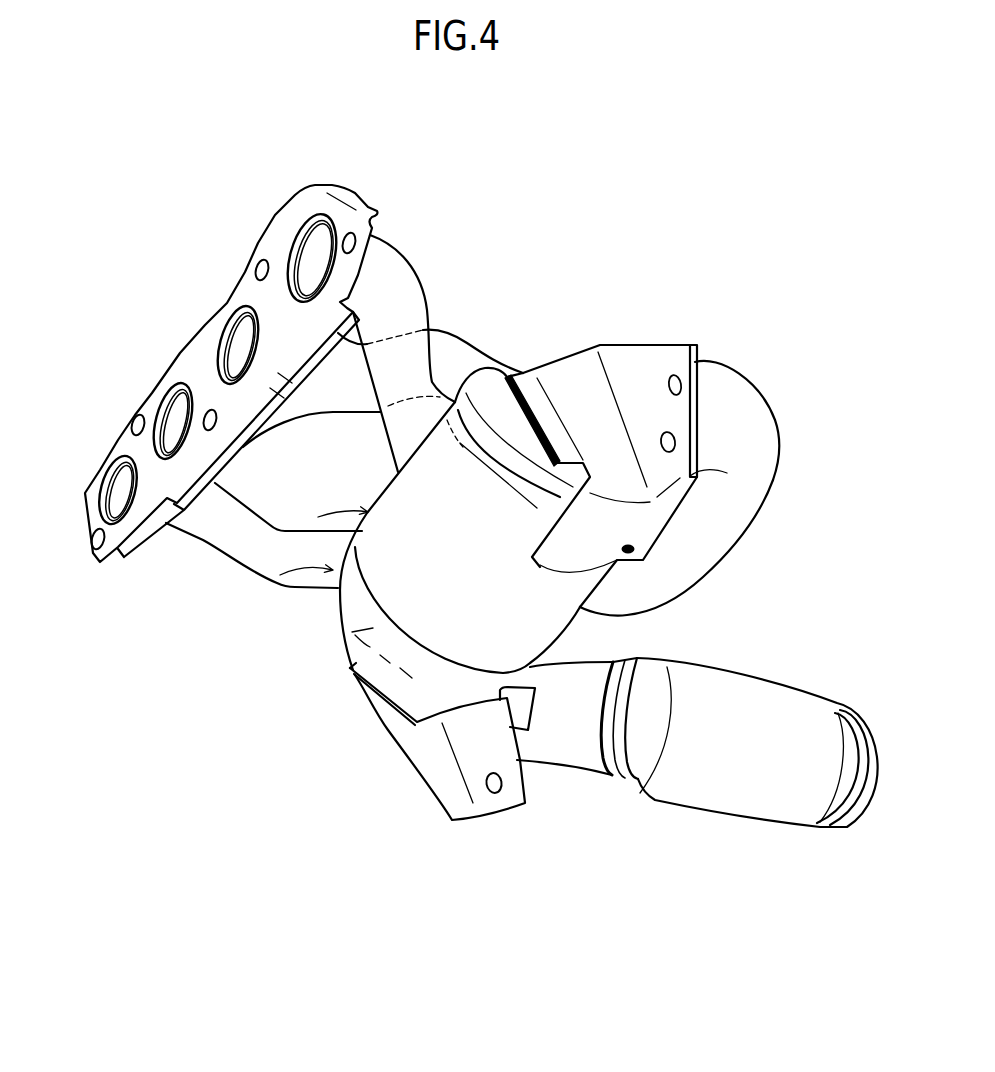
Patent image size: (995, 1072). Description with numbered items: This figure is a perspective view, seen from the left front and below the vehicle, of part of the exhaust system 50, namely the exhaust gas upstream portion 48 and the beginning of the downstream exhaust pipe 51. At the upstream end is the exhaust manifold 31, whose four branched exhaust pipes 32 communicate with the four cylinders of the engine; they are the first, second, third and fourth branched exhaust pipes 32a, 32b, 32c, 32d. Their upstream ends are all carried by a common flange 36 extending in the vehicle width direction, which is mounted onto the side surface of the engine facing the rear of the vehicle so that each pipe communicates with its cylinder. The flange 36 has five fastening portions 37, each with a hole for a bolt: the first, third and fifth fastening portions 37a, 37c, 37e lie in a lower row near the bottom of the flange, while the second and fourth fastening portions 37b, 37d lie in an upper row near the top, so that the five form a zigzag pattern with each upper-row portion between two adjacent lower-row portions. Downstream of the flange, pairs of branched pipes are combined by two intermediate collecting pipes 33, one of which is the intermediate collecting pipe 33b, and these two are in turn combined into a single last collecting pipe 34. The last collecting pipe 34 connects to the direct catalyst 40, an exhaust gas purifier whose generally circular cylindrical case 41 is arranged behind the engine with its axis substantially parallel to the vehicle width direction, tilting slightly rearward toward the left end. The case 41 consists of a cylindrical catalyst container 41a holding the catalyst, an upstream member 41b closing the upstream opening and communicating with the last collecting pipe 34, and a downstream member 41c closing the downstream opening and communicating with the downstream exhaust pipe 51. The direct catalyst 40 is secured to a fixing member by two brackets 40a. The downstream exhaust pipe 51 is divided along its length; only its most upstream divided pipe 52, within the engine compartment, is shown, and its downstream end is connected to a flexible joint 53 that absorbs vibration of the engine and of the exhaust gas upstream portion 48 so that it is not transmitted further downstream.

The exhaust manifold 31 is at (422, 254).
The flange 36 is at (233, 283).
The fastening portions 37 is at (218, 321).
The first fastening portion 37a is at (92, 539).
The second fastening portion 37b is at (132, 422).
The third fastening portion 37c is at (204, 414).
The fourth fastening portion 37d is at (258, 266).
The fifth fastening portion 37e is at (344, 234).
The branched exhaust pipes 32 is at (312, 401).
The first branched exhaust pipe 32a is at (203, 530).
The second branched exhaust pipe 32b is at (272, 425).
The third branched exhaust pipe 32c is at (303, 398).
The fourth branched exhaust pipe 32d is at (393, 267).
The intermediate collecting pipes 33 is at (499, 307).
The intermediate collecting pipe 33b is at (467, 347).
The last collecting pipe 34 is at (728, 508).
The exhaust gas upstream portion 48 is at (773, 370).
The direct catalyst 40 is at (340, 567).
The brackets 40a is at (640, 345).
The case 41 is at (283, 527).
The catalyst container 41a is at (410, 572).
The upstream member 41b is at (498, 383).
The downstream member 41c is at (353, 627).
The exhaust system 50 is at (711, 844).
The downstream exhaust pipe 51 is at (568, 761).
The most upstream divided pipe 52 is at (567, 740).
The flexible joint 53 is at (785, 697).